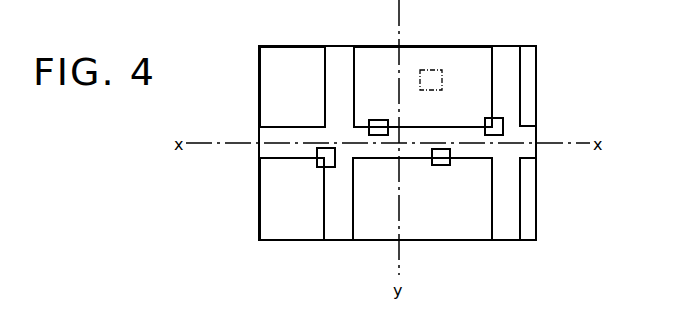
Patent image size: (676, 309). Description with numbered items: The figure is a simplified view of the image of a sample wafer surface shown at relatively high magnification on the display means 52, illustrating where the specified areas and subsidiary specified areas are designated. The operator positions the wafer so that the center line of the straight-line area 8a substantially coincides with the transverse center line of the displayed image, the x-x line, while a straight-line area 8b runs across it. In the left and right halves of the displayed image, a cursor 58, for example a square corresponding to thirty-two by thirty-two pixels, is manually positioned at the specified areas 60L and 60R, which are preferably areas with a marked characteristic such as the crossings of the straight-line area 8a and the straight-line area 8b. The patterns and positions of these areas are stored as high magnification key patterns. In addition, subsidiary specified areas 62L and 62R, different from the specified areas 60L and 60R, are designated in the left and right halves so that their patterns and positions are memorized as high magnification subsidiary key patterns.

The display means 52 is at (537, 65).
The straight-line area 8b is at (325, 79).
The straight-line area 8a is at (289, 158).
The cursor 58 is at (438, 70).
The subsidiary specified area 62L is at (380, 120).
The specified area 60R is at (488, 120).
The specified area 60L is at (323, 167).
The subsidiary specified area 62R is at (434, 165).